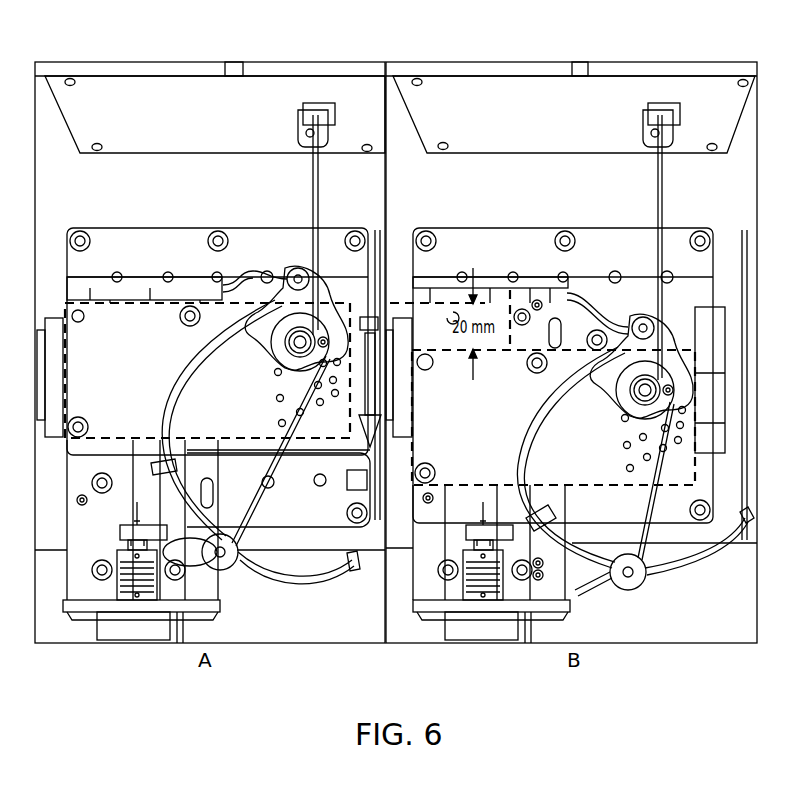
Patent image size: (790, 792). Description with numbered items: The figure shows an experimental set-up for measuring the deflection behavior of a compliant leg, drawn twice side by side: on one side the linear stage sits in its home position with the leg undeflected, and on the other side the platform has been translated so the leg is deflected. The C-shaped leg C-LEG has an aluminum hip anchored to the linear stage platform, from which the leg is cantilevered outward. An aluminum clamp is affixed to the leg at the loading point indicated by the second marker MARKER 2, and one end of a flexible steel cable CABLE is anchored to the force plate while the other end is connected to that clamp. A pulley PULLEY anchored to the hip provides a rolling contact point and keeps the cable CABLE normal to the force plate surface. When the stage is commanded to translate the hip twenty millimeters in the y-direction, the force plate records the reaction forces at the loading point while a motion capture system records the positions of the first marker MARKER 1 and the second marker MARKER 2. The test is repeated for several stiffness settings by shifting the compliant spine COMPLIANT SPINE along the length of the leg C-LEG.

The flexible steel cable CABLE is at (304, 188).
The Marker 1 MARKER 1 is at (290, 266).
The compliant spine COMPLIANT SPINE is at (157, 390).
The pulley PULLEY is at (276, 366).
The C-leg C-LEG is at (168, 507).
The Marker 2 MARKER 2 is at (205, 560).